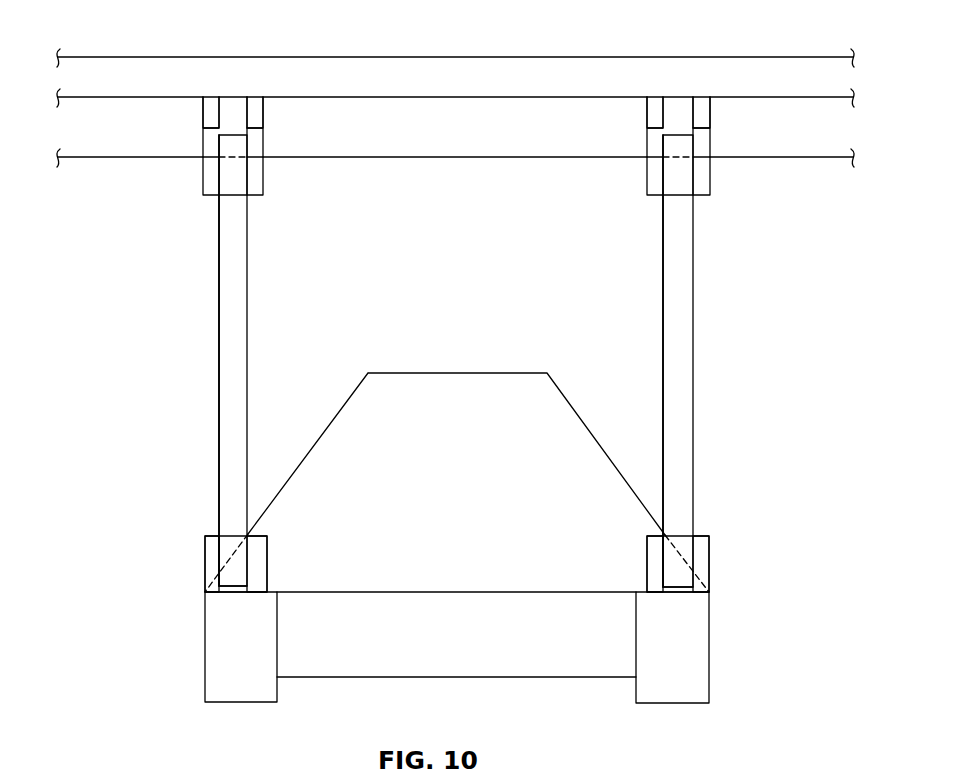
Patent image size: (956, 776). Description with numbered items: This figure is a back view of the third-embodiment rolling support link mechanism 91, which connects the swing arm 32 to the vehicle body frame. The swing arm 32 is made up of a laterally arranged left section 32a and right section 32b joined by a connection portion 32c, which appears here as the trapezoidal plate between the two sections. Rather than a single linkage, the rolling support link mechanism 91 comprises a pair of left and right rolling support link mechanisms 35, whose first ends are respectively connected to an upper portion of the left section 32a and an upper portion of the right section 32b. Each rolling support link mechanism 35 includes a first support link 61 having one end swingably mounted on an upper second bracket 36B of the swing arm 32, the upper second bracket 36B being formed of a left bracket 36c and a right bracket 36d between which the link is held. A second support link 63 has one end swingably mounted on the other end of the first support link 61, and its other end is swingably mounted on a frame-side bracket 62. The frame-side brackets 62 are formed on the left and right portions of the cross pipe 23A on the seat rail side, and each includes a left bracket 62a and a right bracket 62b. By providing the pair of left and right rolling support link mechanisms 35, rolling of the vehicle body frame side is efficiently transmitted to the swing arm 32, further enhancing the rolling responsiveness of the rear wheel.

The cross pipe 23A is at (365, 73).
The frame-side bracket 62 is at (193, 113).
The left bracket 62a is at (207, 122).
The right bracket 62b is at (260, 113).
The second support link 63 is at (258, 182).
The first support link 61 is at (238, 327).
The rolling support link mechanism 35 is at (207, 368).
The rolling support link mechanism 91 is at (184, 325).
The connection portion 32c is at (445, 387).
The upper second bracket 36B is at (189, 538).
The left bracket 36c is at (210, 550).
The right bracket 36d is at (268, 568).
The left section 32a is at (220, 615).
The right section 32b is at (700, 670).
The swing arm 32 is at (474, 683).